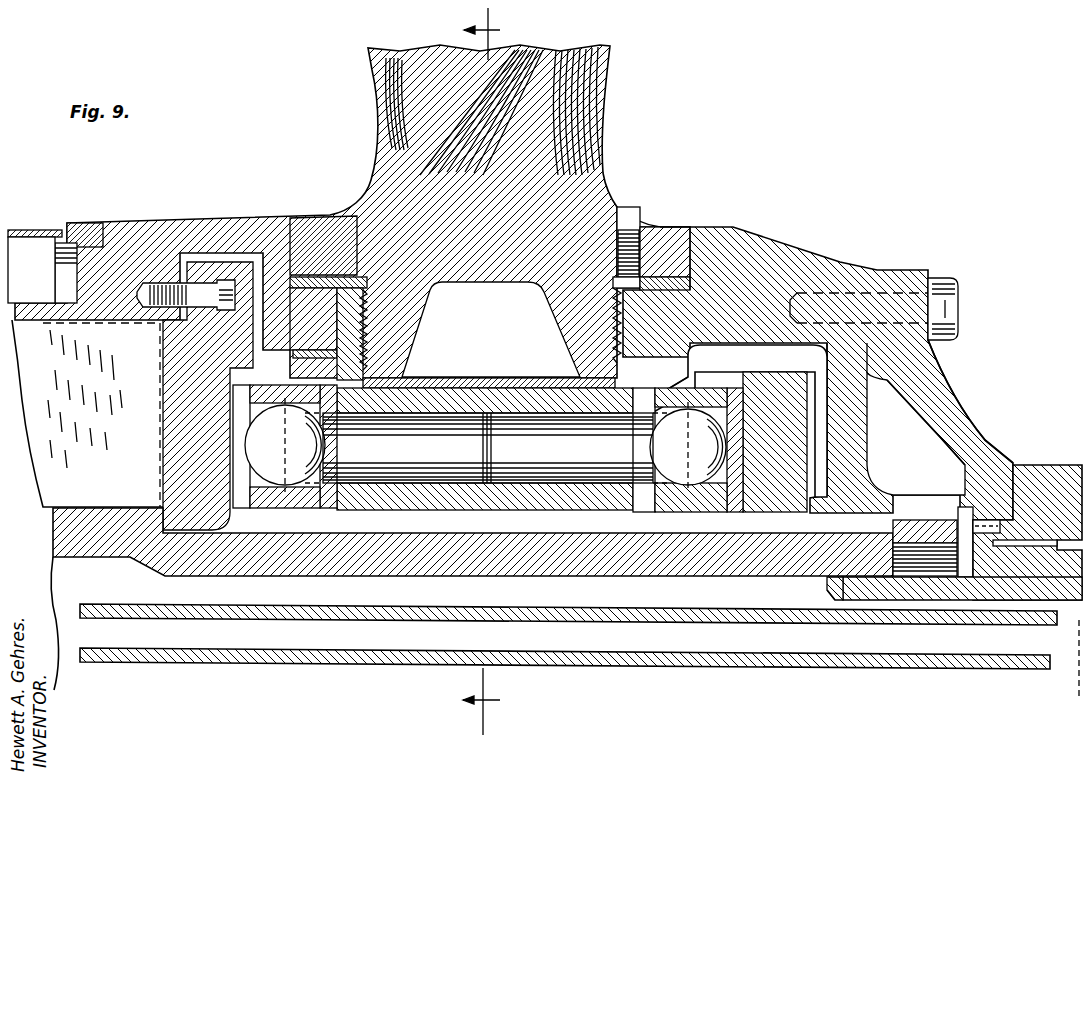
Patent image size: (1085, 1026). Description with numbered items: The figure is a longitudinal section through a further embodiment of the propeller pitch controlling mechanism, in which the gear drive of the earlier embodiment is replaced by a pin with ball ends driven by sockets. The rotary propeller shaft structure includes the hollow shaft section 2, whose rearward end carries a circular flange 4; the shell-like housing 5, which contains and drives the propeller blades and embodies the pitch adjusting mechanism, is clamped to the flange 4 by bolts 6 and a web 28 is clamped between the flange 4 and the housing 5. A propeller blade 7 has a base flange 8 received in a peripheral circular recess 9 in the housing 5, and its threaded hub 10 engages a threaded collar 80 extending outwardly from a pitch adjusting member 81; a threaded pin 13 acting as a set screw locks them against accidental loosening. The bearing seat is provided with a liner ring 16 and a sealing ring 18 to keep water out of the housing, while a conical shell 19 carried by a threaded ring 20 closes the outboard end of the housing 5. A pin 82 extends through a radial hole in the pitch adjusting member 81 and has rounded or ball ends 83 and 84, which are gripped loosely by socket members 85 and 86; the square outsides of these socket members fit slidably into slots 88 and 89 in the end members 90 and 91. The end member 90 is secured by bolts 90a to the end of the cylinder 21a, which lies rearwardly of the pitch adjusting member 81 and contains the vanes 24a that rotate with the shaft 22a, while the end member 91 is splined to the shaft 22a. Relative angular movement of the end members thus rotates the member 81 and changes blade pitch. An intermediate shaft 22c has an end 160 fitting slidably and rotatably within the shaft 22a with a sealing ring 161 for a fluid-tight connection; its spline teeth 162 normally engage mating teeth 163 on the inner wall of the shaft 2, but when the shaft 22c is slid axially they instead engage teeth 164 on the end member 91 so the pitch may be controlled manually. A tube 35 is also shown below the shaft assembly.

The hollow shaft section 2 is at (1030, 465).
The circular flange 4 is at (930, 390).
The housing 5 is at (186, 222).
The bolts 6 is at (944, 278).
The propeller blade 7 is at (398, 92).
The base flange 8 is at (656, 226).
The peripheral circular recess 9 is at (298, 222).
The threaded hub 10 is at (578, 320).
The threaded pin 13 is at (625, 228).
The liner ring 16 is at (592, 338).
The sealing ring 18 is at (688, 250).
The conical shell 19 is at (30, 230).
The threaded ring 20 is at (86, 223).
The cylinder 21a is at (36, 304).
The shaft 22a is at (262, 562).
The intermediate shaft 22c is at (928, 598).
The vanes 24a is at (110, 418).
The web 28 is at (860, 435).
The tube 35 is at (928, 670).
The threaded collar 80 is at (600, 355).
The pitch adjusting member 81 is at (462, 378).
The pin 82 is at (446, 452).
The ball end 83 is at (244, 398).
The ball end 84 is at (735, 410).
The socket member 85 is at (292, 385).
The socket member 86 is at (710, 390).
The slot 88 is at (243, 370).
The slot 89 is at (700, 374).
The end member 90 is at (200, 335).
The bolts 90a is at (228, 288).
The end member 91 is at (773, 376).
The end 160 is at (830, 600).
The sealing ring 161 is at (835, 584).
The spline teeth 162 is at (1034, 542).
The mating teeth 163 is at (976, 519).
The teeth 164 is at (926, 520).